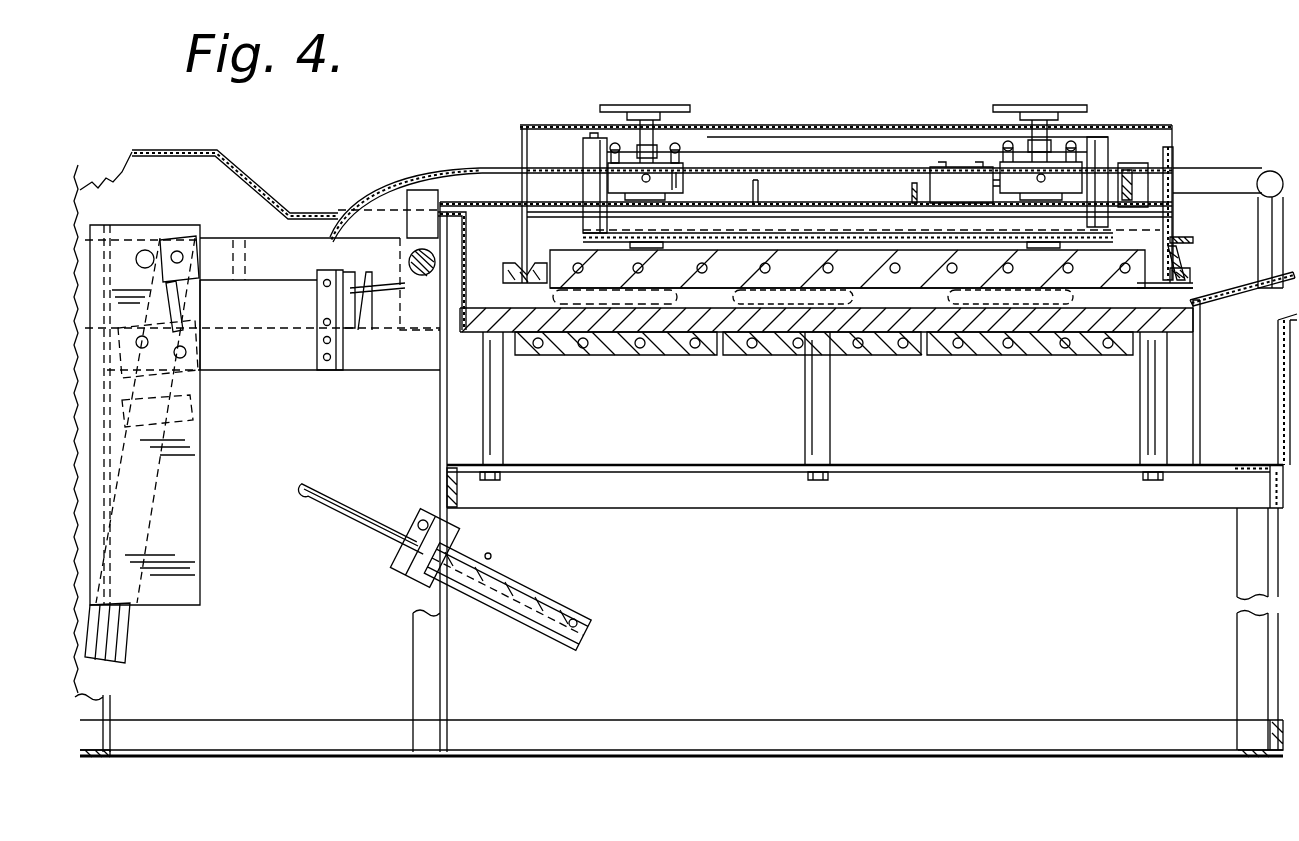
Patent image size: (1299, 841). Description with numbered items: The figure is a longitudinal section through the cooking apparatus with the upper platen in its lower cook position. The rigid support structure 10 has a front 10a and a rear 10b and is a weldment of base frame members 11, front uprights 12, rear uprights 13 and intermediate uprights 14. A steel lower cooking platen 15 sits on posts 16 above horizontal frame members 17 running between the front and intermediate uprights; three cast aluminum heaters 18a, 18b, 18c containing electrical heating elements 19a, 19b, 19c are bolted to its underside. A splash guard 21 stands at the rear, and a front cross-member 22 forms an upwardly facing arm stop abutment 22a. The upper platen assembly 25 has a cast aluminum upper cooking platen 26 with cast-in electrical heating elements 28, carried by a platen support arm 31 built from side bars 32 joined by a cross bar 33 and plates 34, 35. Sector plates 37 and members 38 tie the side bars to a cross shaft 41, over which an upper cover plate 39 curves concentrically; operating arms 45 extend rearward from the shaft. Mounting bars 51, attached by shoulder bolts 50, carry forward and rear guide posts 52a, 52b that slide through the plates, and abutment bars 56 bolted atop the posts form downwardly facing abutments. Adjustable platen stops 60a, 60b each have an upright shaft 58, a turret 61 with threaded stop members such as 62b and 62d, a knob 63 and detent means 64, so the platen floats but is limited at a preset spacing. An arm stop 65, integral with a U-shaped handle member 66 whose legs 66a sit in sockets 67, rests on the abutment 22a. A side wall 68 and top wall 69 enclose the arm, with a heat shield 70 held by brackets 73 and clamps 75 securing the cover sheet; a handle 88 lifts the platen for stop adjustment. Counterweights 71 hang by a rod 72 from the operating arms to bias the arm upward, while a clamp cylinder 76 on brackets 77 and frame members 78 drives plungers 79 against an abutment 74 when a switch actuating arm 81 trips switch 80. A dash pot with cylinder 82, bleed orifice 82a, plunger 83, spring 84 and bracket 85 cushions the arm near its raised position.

The support structure 10 is at (679, 611).
The front of support structure 10a is at (1298, 375).
The rear of support structure 10b is at (83, 173).
The base frame members 11 is at (712, 727).
The front uprights 12 is at (1255, 658).
The rear uprights 13 is at (100, 708).
The intermediate uprights 14 is at (437, 670).
The lower cooking platen 15 is at (1020, 318).
The posts 16 is at (823, 420).
The horizontal frame members 17 is at (858, 517).
The heater 18a is at (597, 358).
The heater 18b is at (777, 356).
The heater 18c is at (993, 358).
The electrical heating element 19a is at (537, 348).
The electrical heating element 19b is at (747, 348).
The electrical heating element 19c is at (948, 348).
The splash guard 21 is at (465, 265).
The front cross-member 22 is at (1257, 273).
The arm stop abutment 22a is at (1278, 338).
The upper platen assembly 25 is at (1165, 118).
The upper cooking platen 26 is at (1113, 282).
The electrical heating elements 28 is at (765, 250).
The platen support arm 31 is at (783, 167).
The side bars 32 is at (873, 180).
The cross bar 33 is at (1170, 145).
The plate 34 is at (923, 177).
The plate 35 is at (755, 183).
The sector plates 37 is at (372, 200).
The members 38 is at (417, 227).
The upper cover plate 39 is at (457, 167).
The cross shaft 41 is at (420, 282).
The operating arms 45 is at (270, 253).
The shoulder bolts 50 is at (650, 248).
The mounting bars 51 is at (960, 233).
The forward guide post 52a is at (1095, 140).
The rear guide post 52b is at (582, 148).
The abutment bars 56 is at (717, 150).
The upright shaft 58 is at (645, 118).
The adjustable platen stop 60a is at (1023, 167).
The adjustable platen stop 60b is at (678, 153).
The turret 61 is at (607, 183).
The adjustable stop member 62b is at (615, 144).
The adjustable stop member 62d is at (707, 135).
The knob or handle 63 is at (657, 106).
The detent means 64 is at (943, 165).
The arm stop 65 is at (1258, 290).
The handle member 66 is at (1275, 171).
The legs 66a is at (1190, 173).
The sockets 67 is at (1127, 163).
The side wall 68 is at (522, 130).
The top wall 69 is at (837, 127).
The heat shield 70 is at (568, 220).
The counterweights 71 is at (190, 520).
The rod 72 is at (145, 247).
The brackets 73 is at (1146, 286).
The abutment 74 is at (187, 293).
The clamps 75 is at (1180, 260).
The clamp cylinder 76 is at (125, 630).
The brackets 77 is at (197, 405).
The frame members 78 is at (290, 377).
The plungers 79 is at (187, 333).
The switch 80 is at (323, 303).
The switch actuating arm 81 is at (389, 288).
The cylinder 82 is at (540, 580).
The bleed orifice 82a is at (580, 625).
The plunger 83 is at (353, 513).
The spring 84 is at (488, 552).
The bracket 85 is at (400, 567).
The handle 88 is at (1180, 238).